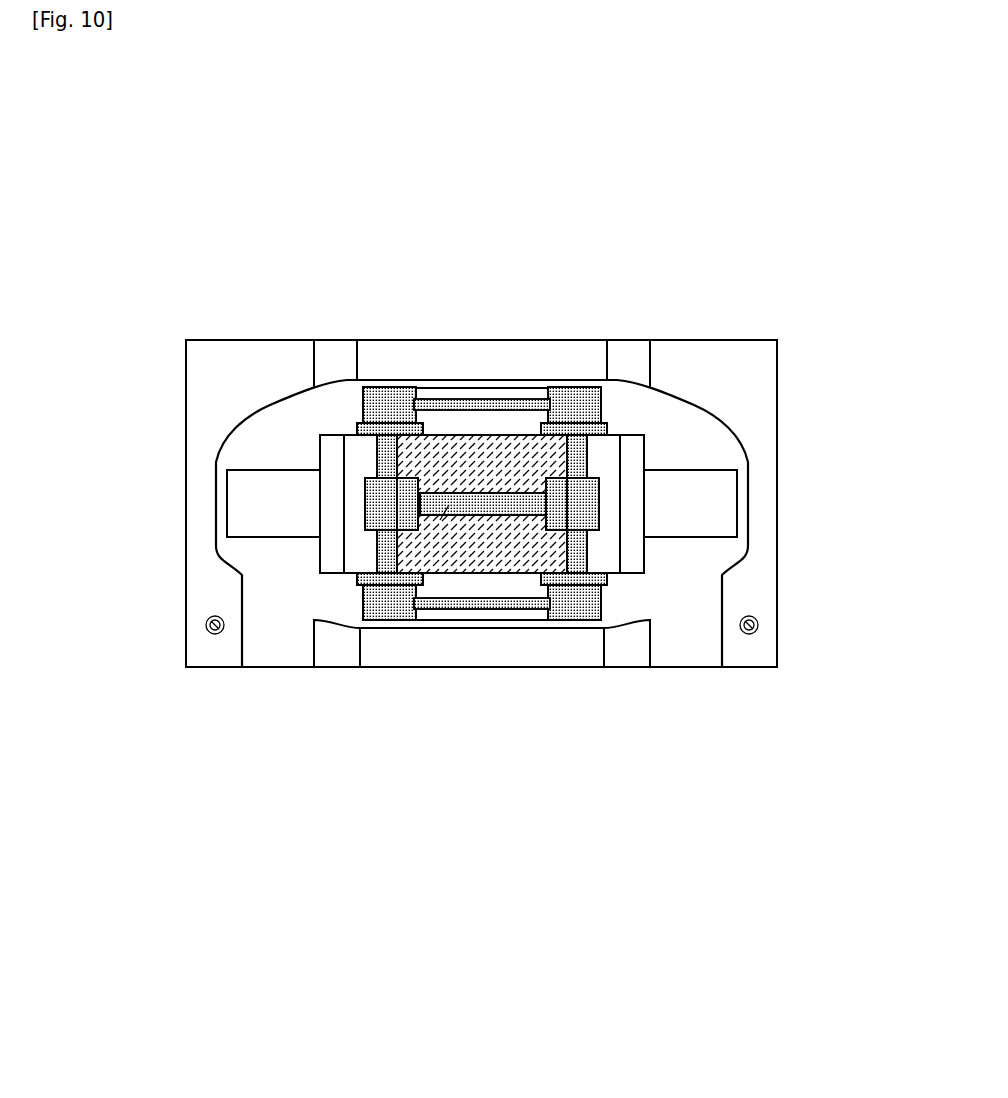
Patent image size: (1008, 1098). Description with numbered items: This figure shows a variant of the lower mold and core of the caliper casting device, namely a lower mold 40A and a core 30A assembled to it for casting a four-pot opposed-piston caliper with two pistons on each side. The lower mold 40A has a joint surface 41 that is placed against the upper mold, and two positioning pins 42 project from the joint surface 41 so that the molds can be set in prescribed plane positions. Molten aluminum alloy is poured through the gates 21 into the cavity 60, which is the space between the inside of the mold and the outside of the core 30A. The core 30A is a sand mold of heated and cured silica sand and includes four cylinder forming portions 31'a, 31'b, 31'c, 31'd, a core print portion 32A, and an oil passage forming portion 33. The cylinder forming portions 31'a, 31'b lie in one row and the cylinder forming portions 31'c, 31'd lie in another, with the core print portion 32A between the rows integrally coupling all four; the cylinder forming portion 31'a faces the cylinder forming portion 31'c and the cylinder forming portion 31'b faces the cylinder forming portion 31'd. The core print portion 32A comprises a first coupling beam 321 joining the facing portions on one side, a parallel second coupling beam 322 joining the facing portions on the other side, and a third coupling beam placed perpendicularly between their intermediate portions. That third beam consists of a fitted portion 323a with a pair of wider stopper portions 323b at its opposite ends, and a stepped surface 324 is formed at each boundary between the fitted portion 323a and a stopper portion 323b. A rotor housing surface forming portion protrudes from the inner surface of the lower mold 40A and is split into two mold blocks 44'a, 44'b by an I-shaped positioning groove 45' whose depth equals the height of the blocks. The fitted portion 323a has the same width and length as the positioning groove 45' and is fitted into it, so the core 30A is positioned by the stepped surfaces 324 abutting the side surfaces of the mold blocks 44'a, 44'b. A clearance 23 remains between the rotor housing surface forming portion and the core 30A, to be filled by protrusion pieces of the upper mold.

The gate 21 is at (282, 670).
The clearance 23 is at (350, 437).
The core 30A is at (612, 503).
The cylinder forming portion 31'a is at (375, 720).
The cylinder forming portion 31'b is at (608, 704).
The cylinder forming portion 31'c is at (375, 291).
The cylinder forming portion 31'd is at (605, 295).
The core print portion 32A is at (456, 489).
The oil passage forming portion 33 is at (512, 398).
The lower mold 40A is at (701, 247).
The joint surface 41 is at (217, 350).
The positioning pin 42 is at (205, 623).
The mold block 44'a is at (477, 308).
The mold block 44'b is at (477, 704).
The positioning groove 45' is at (430, 650).
The cavity 60 is at (327, 588).
The first coupling beam 321 is at (373, 455).
The second coupling beam 322 is at (580, 462).
The fitted portion 323a is at (507, 517).
The stopper portion 323b is at (365, 503).
The stepped surface 324 is at (440, 437).